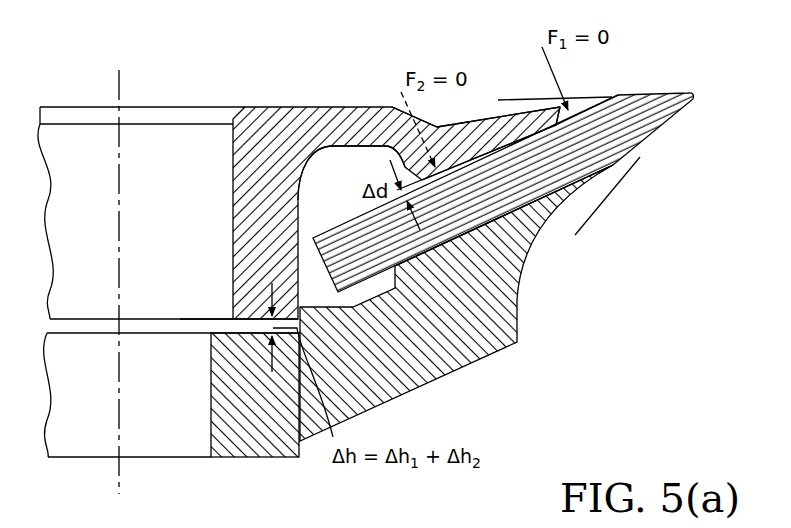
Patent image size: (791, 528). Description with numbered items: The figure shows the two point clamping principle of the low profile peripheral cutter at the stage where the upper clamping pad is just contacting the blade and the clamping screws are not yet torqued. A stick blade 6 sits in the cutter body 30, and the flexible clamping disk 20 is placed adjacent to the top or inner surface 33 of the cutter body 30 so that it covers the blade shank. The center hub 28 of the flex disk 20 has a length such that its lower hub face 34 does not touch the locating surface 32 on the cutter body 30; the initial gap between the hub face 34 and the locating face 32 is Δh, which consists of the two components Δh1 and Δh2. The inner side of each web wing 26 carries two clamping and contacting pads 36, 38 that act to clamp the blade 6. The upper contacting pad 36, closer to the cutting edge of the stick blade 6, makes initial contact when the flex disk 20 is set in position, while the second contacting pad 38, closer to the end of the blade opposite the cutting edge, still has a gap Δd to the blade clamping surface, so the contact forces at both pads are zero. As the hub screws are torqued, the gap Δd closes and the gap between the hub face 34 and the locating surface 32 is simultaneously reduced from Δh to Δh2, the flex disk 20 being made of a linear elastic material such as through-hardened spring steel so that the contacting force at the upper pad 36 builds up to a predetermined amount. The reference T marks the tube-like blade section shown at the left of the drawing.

The tube T is at (118, 81).
The flexible clamping disk 20 is at (260, 107).
The center hub 28 is at (270, 202).
The second contacting pad 38 is at (403, 180).
The web wing 26 is at (493, 128).
The cutter body 30 is at (495, 307).
The stick blade 6 is at (657, 118).
The inner surface 33 is at (440, 250).
The upper contacting pad 36 is at (583, 105).
The locating surface 32 is at (222, 327).
The lower hub face 34 is at (248, 321).